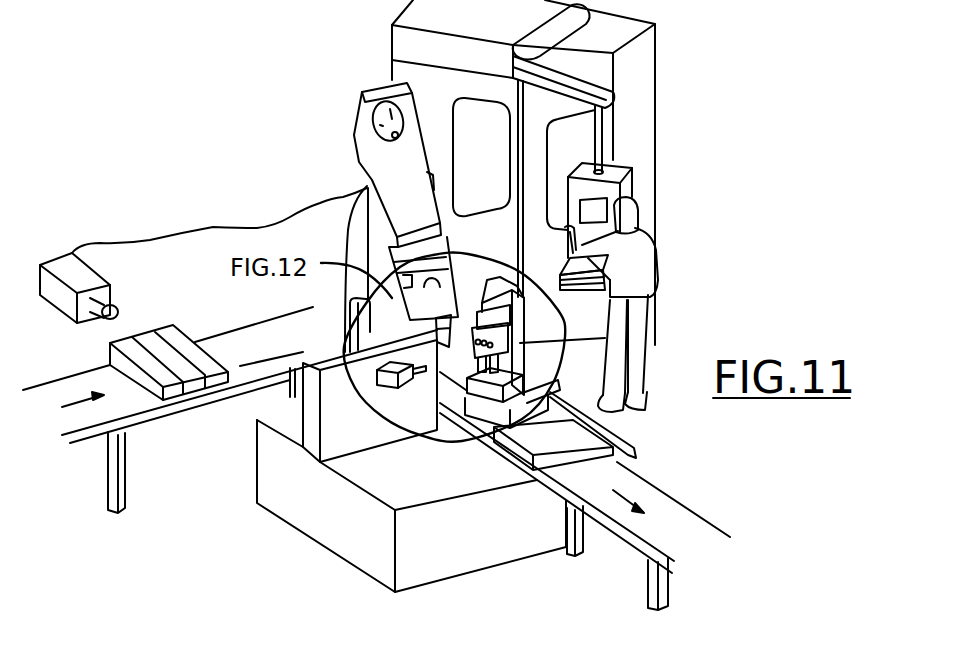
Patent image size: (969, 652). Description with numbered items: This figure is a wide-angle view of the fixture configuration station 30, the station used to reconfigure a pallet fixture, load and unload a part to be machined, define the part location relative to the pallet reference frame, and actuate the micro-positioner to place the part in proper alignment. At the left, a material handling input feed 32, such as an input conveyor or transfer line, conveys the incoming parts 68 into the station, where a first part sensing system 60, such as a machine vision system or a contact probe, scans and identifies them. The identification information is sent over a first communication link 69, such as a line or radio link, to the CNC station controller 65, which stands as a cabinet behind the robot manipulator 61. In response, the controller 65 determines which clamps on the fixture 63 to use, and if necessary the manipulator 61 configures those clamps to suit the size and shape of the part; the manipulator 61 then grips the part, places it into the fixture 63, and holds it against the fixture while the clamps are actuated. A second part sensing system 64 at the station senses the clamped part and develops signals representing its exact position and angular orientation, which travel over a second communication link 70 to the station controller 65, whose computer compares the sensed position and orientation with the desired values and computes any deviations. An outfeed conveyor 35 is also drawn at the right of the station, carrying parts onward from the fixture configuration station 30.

The fixture configuration station 30 is at (706, 127).
The material handling input feed 32 is at (127, 403).
The output conveyor 35 is at (670, 507).
The first part sensing system 60 is at (60, 265).
The robot manipulator 61 is at (390, 192).
The fixture 63 is at (538, 364).
The second part sensing system 64 is at (397, 388).
The CNC station controller 65 is at (657, 98).
The incoming parts 68 is at (160, 328).
The first communication link 69 is at (213, 227).
The second communication link 70 is at (340, 343).